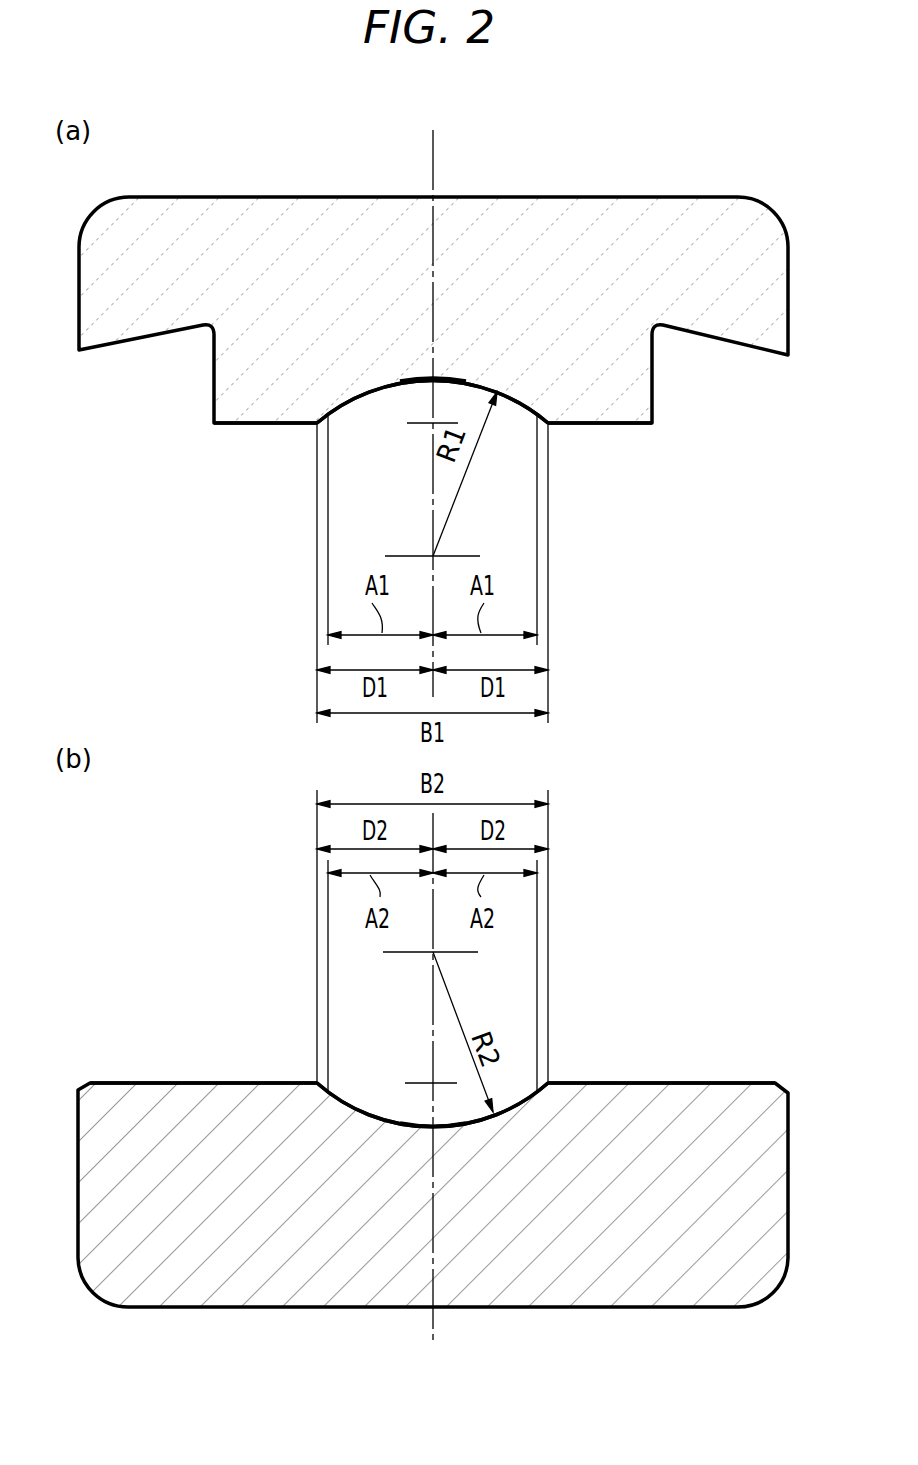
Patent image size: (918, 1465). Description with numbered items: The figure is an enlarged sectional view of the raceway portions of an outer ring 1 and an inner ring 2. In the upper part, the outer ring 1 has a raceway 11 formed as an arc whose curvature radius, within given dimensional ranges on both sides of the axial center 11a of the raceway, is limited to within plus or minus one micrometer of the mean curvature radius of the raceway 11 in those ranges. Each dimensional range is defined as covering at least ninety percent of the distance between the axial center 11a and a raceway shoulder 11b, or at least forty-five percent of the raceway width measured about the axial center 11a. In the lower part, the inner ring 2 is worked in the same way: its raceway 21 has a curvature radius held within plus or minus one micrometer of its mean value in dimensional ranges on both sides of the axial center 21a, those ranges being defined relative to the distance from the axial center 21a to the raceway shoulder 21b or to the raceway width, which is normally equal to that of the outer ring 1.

The outer ring 1 is at (604, 212).
The raceway 11 is at (376, 393).
The axial center 11a is at (430, 423).
The raceway shoulder 11b is at (317, 423).
The inner ring 2 is at (683, 1108).
The raceway 21 is at (360, 1108).
The axial center 21a is at (430, 1083).
The raceway shoulder 21b is at (315, 1083).